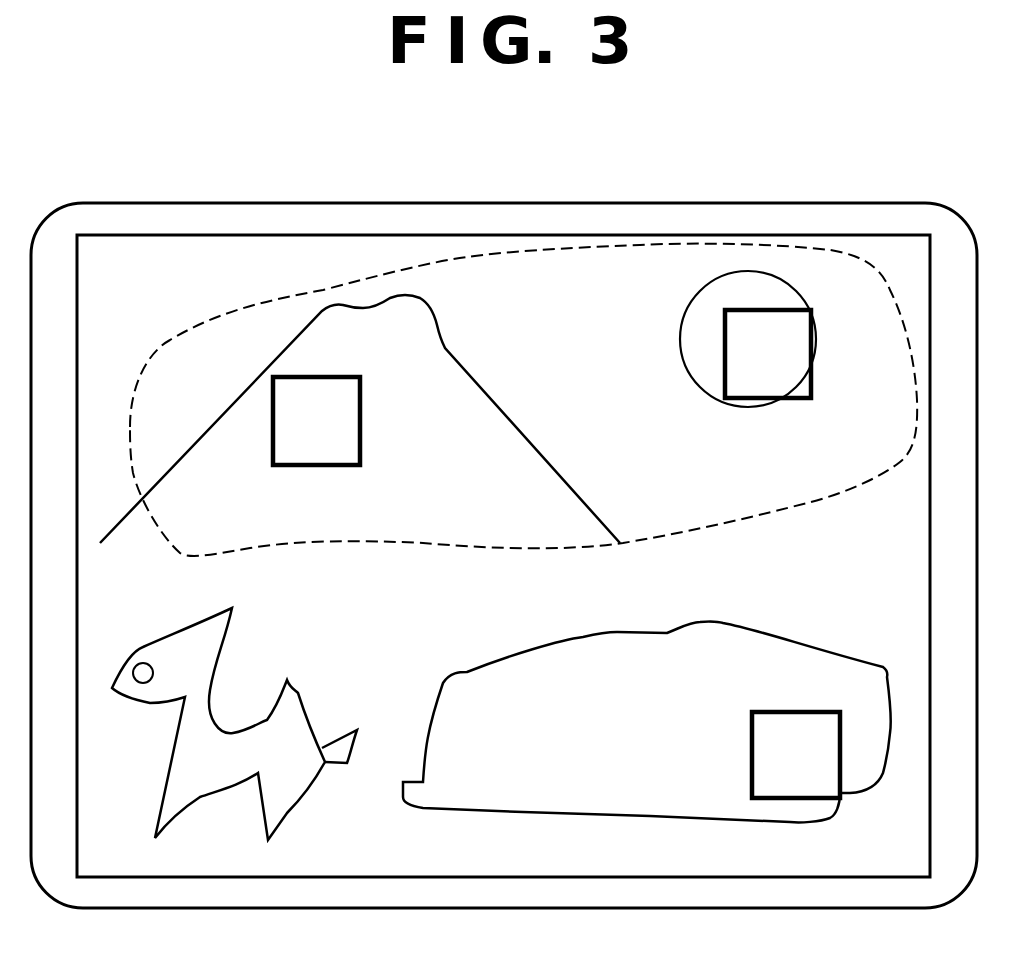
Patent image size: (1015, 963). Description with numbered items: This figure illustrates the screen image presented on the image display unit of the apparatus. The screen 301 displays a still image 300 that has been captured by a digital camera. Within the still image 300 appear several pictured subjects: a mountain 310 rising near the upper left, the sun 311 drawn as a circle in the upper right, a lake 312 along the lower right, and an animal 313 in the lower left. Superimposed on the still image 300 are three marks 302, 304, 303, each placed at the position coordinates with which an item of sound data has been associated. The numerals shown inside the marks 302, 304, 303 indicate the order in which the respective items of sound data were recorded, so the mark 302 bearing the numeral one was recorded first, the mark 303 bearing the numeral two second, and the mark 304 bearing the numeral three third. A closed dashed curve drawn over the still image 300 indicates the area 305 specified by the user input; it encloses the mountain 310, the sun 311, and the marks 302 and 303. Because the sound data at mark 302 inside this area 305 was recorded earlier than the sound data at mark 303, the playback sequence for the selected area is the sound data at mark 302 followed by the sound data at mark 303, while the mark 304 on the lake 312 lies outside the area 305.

The still image 300 is at (180, 235).
The screen 301 is at (308, 203).
The mark 302 is at (362, 437).
The mark 303 is at (773, 308).
The mark 304 is at (750, 743).
The area 305 is at (465, 253).
The mountain 310 is at (558, 477).
The sun 311 is at (700, 287).
The lake 312 is at (813, 645).
The animal 313 is at (300, 690).